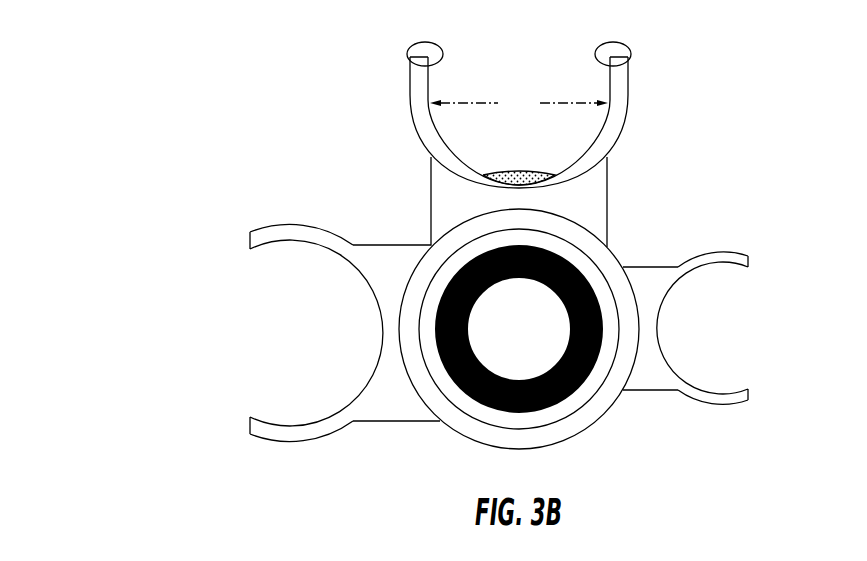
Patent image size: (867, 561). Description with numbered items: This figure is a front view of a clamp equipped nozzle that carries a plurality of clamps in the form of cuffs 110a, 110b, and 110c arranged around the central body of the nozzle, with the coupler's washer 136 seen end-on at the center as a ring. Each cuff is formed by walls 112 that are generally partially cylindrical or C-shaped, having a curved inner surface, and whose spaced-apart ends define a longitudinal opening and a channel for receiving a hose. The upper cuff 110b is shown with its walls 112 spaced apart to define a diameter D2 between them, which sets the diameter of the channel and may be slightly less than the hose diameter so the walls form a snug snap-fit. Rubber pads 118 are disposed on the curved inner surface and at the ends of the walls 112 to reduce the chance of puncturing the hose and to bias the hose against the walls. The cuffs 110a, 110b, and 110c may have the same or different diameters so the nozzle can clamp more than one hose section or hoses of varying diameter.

The cuff 110a is at (285, 441).
The cuff 110b is at (410, 113).
The cuff 110c is at (695, 257).
The walls 112 is at (632, 82).
The rubber pads 118 is at (411, 47).
The washer 136 is at (488, 405).